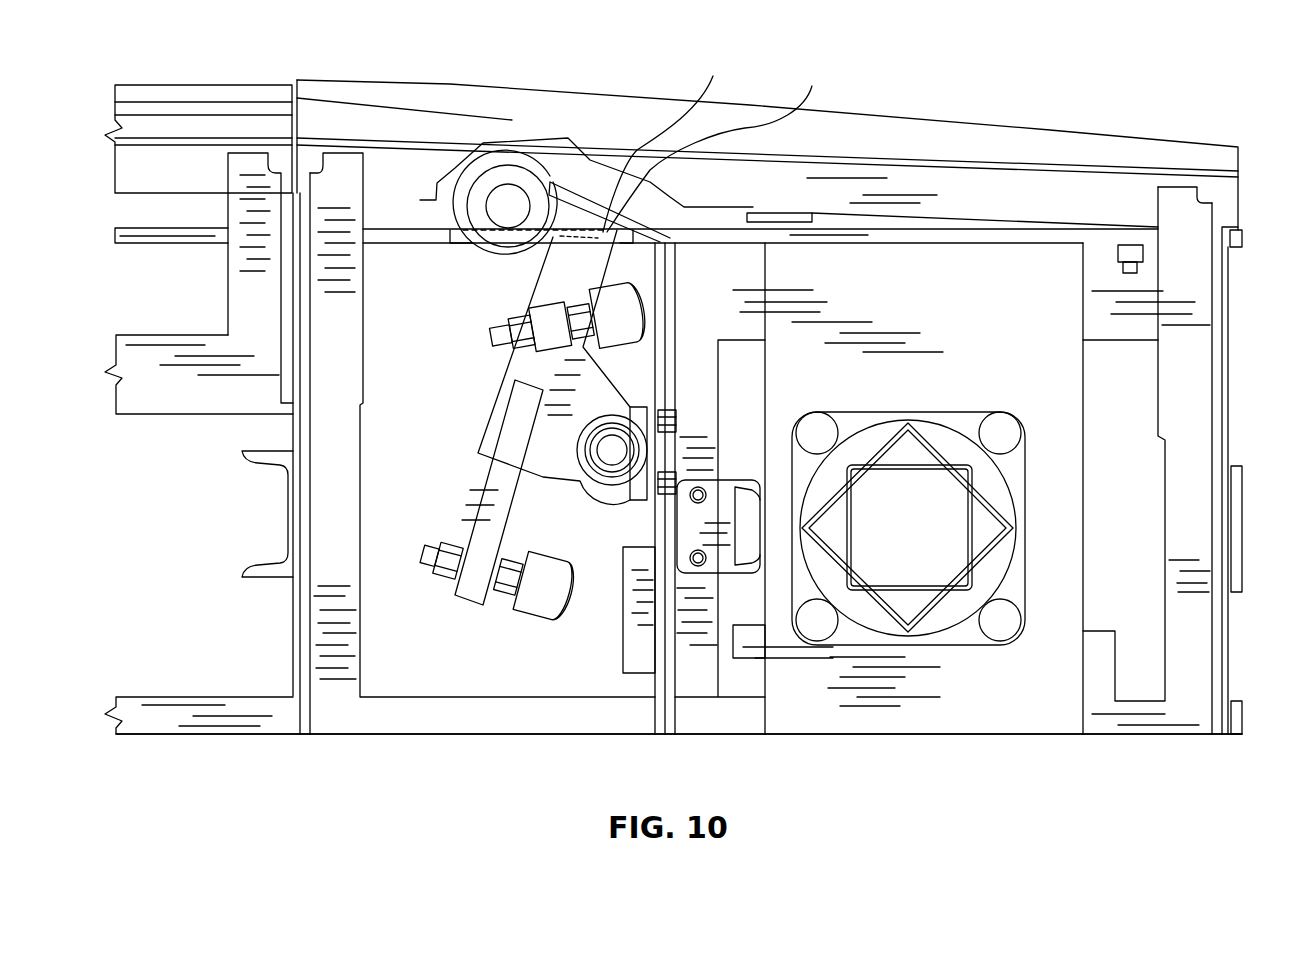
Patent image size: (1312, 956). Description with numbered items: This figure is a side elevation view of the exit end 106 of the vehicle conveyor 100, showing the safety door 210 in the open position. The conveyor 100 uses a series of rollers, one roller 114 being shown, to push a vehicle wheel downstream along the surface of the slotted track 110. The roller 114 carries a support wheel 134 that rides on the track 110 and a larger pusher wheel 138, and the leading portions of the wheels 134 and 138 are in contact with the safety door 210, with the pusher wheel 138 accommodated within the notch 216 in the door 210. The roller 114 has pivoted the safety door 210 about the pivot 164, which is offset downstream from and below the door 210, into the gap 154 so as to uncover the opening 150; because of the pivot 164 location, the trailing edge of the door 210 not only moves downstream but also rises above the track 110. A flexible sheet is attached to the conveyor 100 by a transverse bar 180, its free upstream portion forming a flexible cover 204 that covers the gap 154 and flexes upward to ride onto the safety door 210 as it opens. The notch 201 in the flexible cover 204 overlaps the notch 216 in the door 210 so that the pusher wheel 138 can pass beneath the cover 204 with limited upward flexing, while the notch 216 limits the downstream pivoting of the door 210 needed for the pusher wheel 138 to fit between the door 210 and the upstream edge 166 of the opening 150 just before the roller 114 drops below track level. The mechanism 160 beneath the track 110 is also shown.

The vehicle conveyor 100 is at (178, 768).
The exit end 106 is at (1256, 271).
The slotted track 110 is at (140, 229).
The roller 114 is at (446, 211).
The support wheel 134 is at (517, 170).
The pusher wheel 138 is at (500, 153).
The opening 150 is at (498, 249).
The gap 154 is at (590, 244).
The actuator assembly 160 is at (586, 287).
The pivot 164 is at (617, 443).
The upstream edge 166 is at (498, 237).
The transverse bar 180 is at (817, 212).
The notch 201 is at (567, 177).
The flexible cover 204 is at (676, 141).
The safety door 210 is at (729, 146).
The notch 216 is at (576, 195).